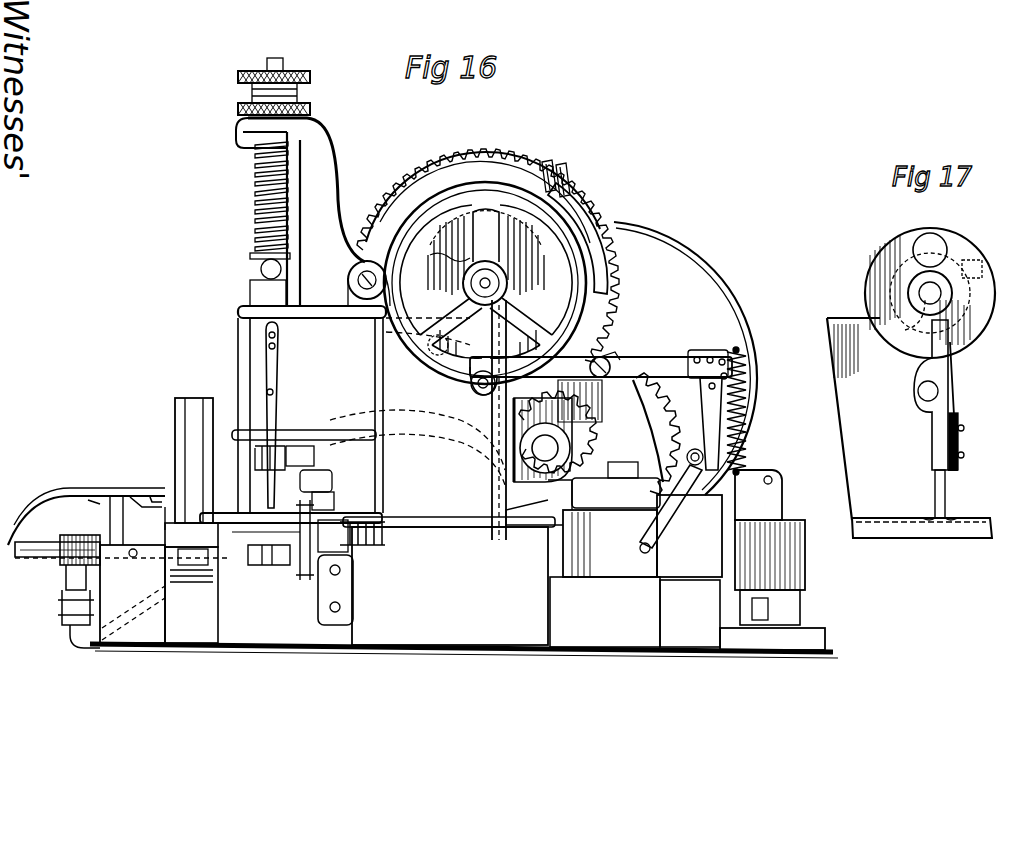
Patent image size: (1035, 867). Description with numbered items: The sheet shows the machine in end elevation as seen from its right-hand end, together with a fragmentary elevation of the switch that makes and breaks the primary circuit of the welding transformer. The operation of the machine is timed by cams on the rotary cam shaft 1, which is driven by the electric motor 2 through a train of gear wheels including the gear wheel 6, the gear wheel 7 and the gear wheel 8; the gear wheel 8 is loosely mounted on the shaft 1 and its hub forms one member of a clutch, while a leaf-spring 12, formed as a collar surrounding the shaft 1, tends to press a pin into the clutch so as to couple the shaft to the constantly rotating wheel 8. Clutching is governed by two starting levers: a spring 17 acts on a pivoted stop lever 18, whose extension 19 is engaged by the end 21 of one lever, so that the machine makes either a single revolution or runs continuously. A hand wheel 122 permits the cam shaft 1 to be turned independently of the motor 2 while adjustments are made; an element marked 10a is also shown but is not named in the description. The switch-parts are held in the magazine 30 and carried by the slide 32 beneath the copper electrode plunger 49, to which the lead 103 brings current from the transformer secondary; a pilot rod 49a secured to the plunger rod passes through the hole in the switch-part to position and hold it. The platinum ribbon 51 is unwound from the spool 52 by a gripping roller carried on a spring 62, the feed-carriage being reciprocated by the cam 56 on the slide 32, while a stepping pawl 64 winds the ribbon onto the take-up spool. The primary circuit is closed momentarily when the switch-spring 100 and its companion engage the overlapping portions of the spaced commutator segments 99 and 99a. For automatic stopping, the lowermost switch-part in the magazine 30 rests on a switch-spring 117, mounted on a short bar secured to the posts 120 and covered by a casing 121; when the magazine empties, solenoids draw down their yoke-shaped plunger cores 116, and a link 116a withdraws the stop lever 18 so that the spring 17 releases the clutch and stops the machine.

In FIG. 16, the rotary cam shaft 1 is at (506, 292).
In FIG. 17, the rotary cam shaft 1 is at (945, 300).
In FIG. 16, the electric motor 2 is at (718, 276).
In FIG. 16, the gear wheel 6 is at (628, 428).
In FIG. 16, the gear wheel 7 is at (590, 434).
In FIG. 16, the gear wheel 8 is at (508, 155).
In FIG. 16, the lever arm 10a is at (718, 350).
In FIG. 16, the leaf-spring 12 is at (592, 412).
In FIG. 16, the spring 17 is at (722, 389).
In FIG. 16, the stop lever 18 is at (748, 412).
In FIG. 16, the extension of stop lever 19 is at (668, 522).
In FIG. 16, the end of lever 21 is at (670, 552).
In FIG. 16, the magazine 30 is at (178, 442).
In FIG. 16, the slide 32 is at (262, 566).
In FIG. 16, the plunger 49 is at (254, 190).
In FIG. 16, the pilot rod 49a is at (276, 416).
In FIG. 16, the platinum ribbon 51 is at (322, 580).
In FIG. 16, the spool 52 is at (312, 578).
In FIG. 16, the cam 56 is at (272, 566).
In FIG. 16, the spring 62 is at (332, 478).
In FIG. 16, the stepping pawl 64 is at (334, 494).
In FIG. 16, the commutator segment 99 is at (485, 283).
In FIG. 17, the commutator segment 99 is at (970, 268).
In FIG. 16, the commutator segment 99a is at (450, 251).
In FIG. 17, the commutator segment 99a is at (897, 247).
In FIG. 17, the switch-spring 100 is at (950, 386).
In FIG. 16, the lead 103 is at (366, 470).
In FIG. 16, the plunger core 116 is at (150, 490).
In FIG. 16, the link 116a is at (783, 506).
In FIG. 16, the switch-spring 117 is at (165, 510).
In FIG. 16, the posts 120 is at (108, 522).
In FIG. 16, the casing 121 is at (104, 487).
In FIG. 16, the hand wheel 122 is at (572, 216).